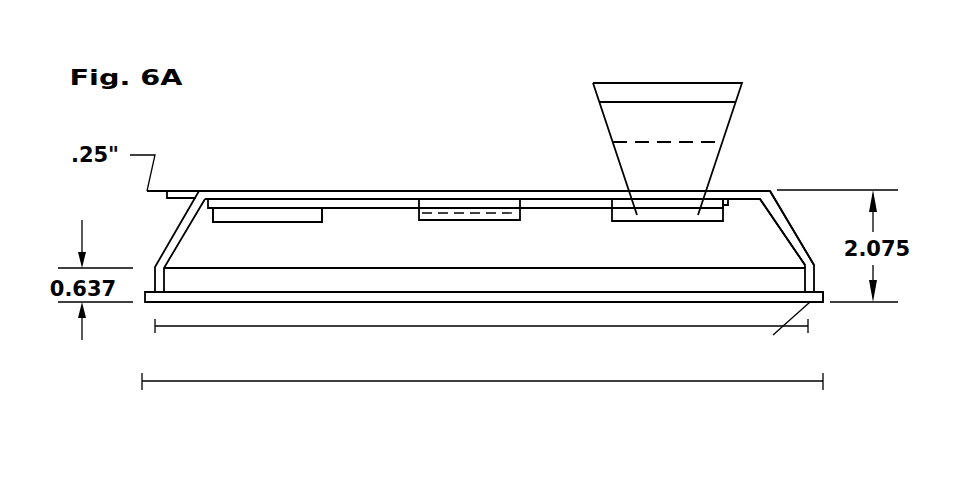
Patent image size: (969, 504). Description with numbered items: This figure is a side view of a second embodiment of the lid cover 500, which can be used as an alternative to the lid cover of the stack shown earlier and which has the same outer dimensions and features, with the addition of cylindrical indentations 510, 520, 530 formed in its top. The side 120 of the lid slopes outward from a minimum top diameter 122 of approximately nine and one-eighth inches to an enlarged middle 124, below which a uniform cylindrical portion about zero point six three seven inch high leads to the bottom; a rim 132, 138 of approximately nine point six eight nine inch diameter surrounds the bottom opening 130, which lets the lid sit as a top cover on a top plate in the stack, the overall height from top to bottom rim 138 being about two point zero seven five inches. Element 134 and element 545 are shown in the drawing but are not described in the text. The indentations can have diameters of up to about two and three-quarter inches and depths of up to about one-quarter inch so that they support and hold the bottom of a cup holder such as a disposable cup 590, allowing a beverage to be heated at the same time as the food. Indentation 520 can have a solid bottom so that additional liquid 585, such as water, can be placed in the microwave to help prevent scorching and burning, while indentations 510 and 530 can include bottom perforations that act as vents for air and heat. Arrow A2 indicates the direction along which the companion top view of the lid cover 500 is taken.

The side 120 is at (782, 227).
The minimum top diameter 122 is at (768, 192).
The enlarged middle 124 is at (768, 228).
The bottom opening 130 is at (282, 302).
The rim 132 is at (145, 302).
The sensor module 134 is at (163, 302).
The bottom rim 138 is at (817, 302).
The lid cover 500 is at (357, 162).
The cylindrical indentation 510 is at (293, 222).
The cylindrical indentation 520 is at (467, 220).
The cylindrical indentation 530 is at (662, 221).
The sample 545 is at (667, 132).
The additional liquid 585 is at (487, 215).
The disposable cup 590 is at (732, 115).
The arrow A2 is at (517, 170).